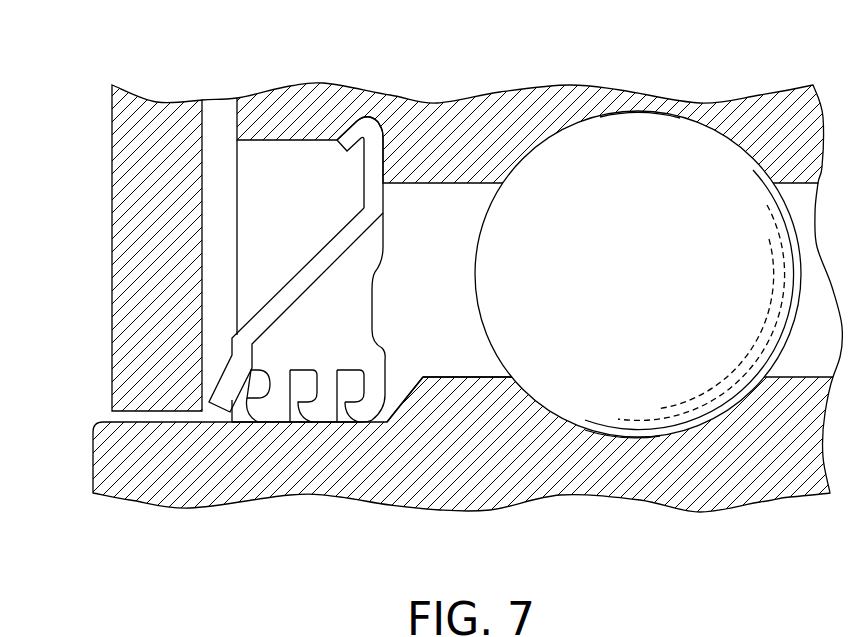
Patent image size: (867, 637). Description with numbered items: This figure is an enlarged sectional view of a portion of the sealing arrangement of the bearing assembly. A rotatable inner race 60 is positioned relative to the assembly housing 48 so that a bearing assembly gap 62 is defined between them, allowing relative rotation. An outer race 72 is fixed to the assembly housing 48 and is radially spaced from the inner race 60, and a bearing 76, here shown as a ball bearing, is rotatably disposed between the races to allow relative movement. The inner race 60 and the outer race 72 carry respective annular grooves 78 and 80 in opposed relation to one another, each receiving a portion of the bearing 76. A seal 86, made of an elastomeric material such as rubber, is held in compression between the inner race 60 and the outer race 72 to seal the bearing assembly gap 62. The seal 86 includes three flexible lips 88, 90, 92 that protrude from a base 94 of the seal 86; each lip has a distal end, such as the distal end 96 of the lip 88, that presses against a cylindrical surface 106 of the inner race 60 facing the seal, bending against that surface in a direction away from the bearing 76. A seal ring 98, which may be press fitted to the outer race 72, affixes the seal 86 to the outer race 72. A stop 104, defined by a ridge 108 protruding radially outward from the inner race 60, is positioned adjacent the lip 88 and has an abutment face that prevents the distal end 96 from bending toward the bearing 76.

The assembly housing 48 is at (137, 147).
The inner race 60 is at (750, 473).
The bearing assembly gap 62 is at (88, 416).
The outer race 72 is at (450, 130).
The bearing 76 is at (700, 160).
The annular groove 78 is at (610, 443).
The annular groove 80 is at (642, 113).
The seal 86 is at (392, 292).
The lip 88 is at (343, 413).
The lip 90 is at (305, 413).
The lip 92 is at (242, 418).
The base 94 is at (342, 277).
The distal end 96 is at (340, 425).
The seal ring 98 is at (300, 277).
The stop 104 is at (398, 408).
The cylindrical surface 106 is at (281, 425).
The ridge 108 is at (460, 433).